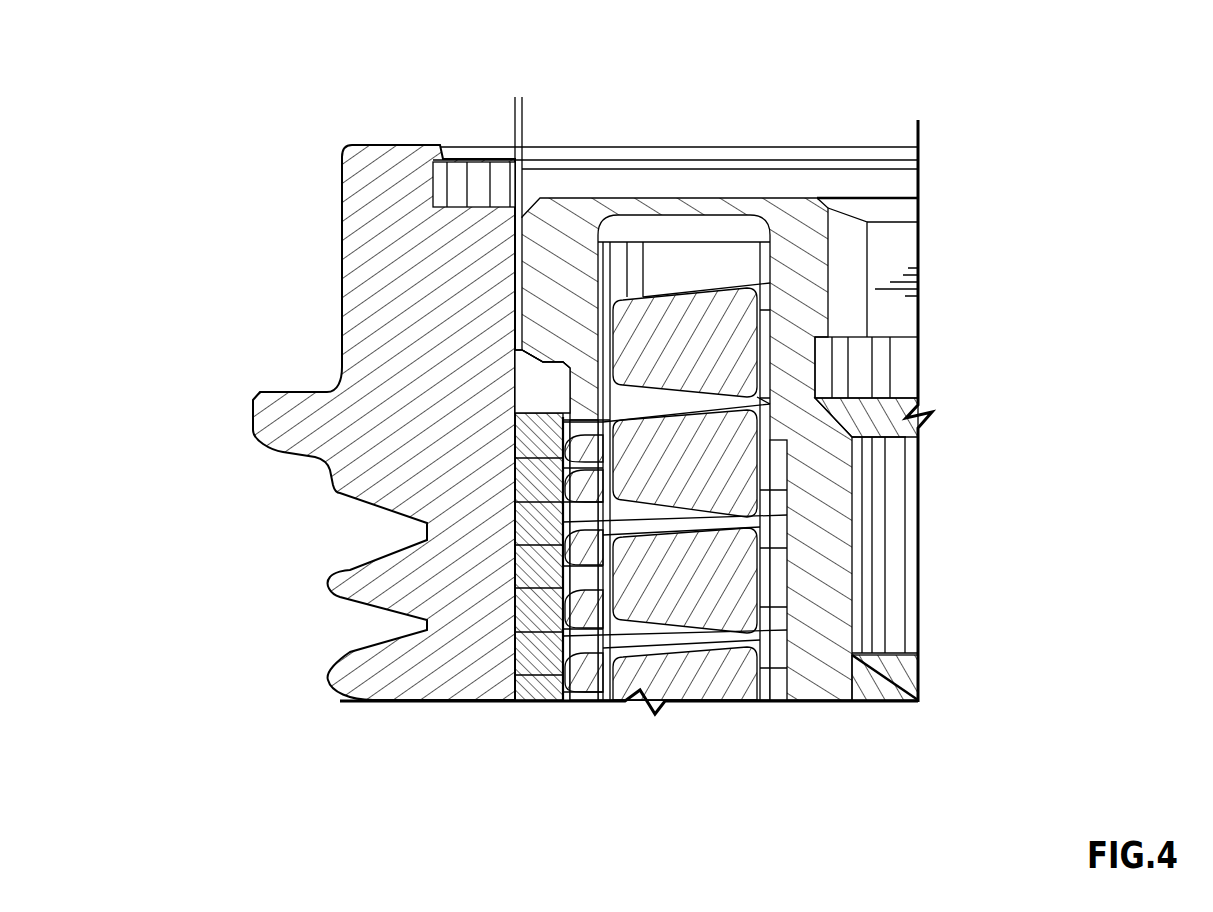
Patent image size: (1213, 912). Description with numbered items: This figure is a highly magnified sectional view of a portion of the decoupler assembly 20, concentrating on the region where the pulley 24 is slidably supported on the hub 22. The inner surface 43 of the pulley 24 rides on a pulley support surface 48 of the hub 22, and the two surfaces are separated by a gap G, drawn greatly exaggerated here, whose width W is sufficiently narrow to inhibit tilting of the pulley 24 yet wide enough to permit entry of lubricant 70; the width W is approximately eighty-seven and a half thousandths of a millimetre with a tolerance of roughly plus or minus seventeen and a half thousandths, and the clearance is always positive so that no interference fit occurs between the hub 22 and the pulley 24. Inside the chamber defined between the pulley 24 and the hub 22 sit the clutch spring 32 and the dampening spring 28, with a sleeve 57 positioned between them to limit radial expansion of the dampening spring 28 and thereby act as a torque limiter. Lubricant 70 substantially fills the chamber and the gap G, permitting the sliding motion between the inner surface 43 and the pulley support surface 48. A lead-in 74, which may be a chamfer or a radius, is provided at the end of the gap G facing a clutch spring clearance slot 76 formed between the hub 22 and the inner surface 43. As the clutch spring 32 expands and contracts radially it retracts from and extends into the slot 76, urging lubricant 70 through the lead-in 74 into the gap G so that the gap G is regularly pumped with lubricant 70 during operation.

The decoupler assembly 20 is at (246, 80).
The hub 22 is at (560, 223).
The pulley 24 is at (355, 197).
The dampening spring 28 is at (723, 447).
The clutch spring 32 is at (538, 665).
The inner surface 43 is at (527, 350).
The pulley support surface 48 is at (428, 197).
The sleeve 57 is at (583, 677).
The lubricant 70 is at (542, 400).
The lead-in 74 is at (515, 287).
The clutch spring clearance slot 76 is at (542, 385).
The gap G is at (515, 235).
The width W is at (548, 103).